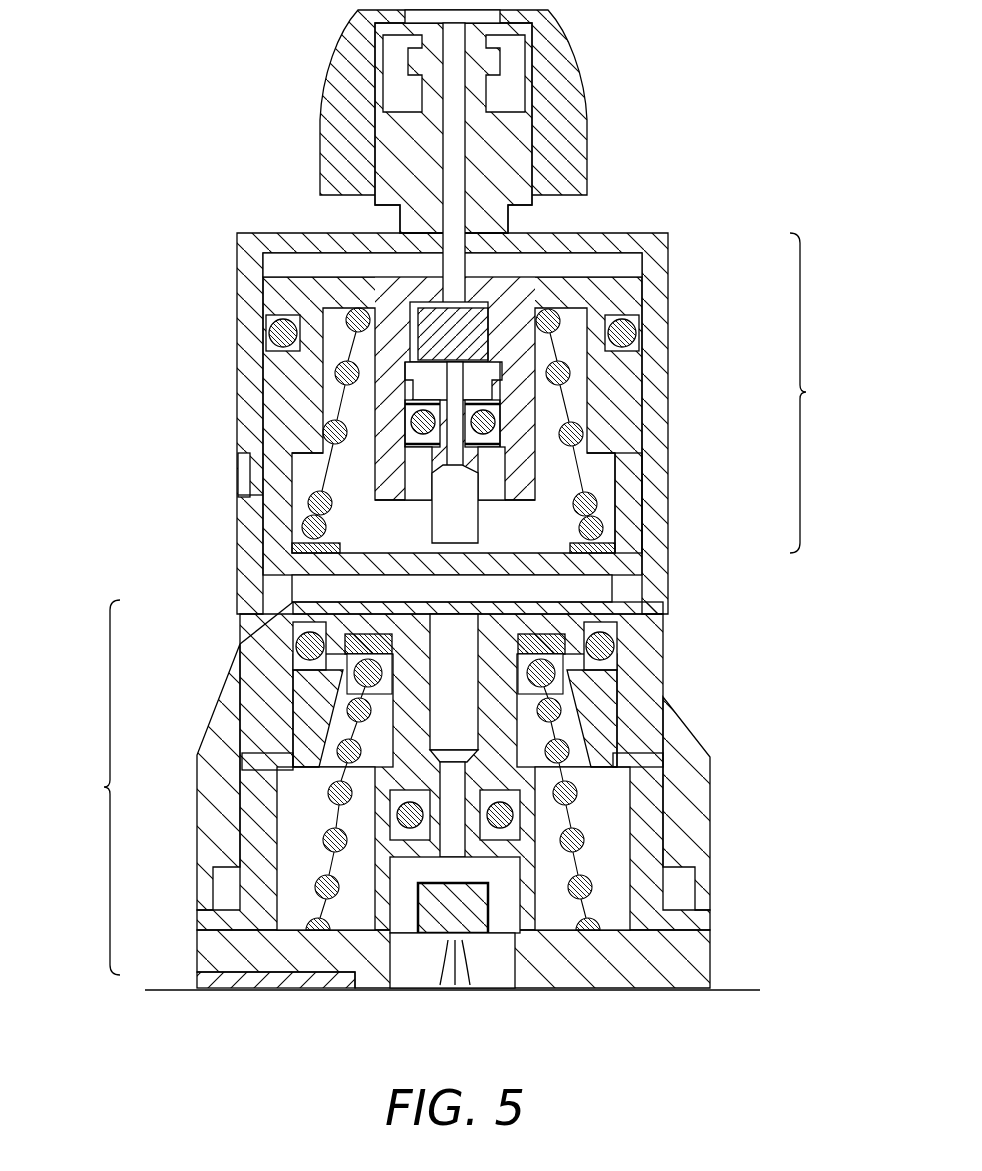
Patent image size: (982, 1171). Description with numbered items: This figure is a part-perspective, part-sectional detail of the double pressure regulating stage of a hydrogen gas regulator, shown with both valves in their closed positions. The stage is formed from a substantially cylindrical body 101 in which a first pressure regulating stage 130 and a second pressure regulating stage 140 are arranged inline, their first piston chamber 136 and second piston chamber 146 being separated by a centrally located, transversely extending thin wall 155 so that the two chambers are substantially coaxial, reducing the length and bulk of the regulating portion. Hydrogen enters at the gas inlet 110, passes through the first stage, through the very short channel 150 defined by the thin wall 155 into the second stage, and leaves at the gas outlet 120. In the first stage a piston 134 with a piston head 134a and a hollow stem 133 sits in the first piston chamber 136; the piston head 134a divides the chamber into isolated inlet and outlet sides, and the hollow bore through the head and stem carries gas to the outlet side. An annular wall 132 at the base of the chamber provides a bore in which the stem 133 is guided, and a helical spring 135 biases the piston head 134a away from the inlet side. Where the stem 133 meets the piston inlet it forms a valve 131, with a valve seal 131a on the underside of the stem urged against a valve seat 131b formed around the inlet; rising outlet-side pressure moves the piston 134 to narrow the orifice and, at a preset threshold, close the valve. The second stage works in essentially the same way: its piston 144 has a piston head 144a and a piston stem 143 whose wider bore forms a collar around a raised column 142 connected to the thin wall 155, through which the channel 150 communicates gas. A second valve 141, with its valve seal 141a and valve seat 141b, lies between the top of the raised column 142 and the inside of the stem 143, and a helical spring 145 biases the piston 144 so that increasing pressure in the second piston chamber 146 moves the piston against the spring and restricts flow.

The cylindrical body 101 is at (245, 288).
The gas inlet 110 is at (455, 975).
The gas outlet 120 is at (355, 40).
The first pressure regulating stage 130 is at (82, 787).
The valve 131 is at (430, 950).
The valve seal 131a is at (405, 968).
The valve seat 131b is at (478, 968).
The annular wall 132 is at (320, 872).
The hollow stem 133 is at (300, 688).
The piston 134 is at (290, 745).
The piston head 134a is at (660, 607).
The helical spring 135 is at (640, 830).
The first piston chamber 136 is at (598, 797).
The second pressure regulating stage 140 is at (826, 393).
The second valve 141 is at (615, 392).
The valve seal 141a is at (505, 345).
The valve seat 141b is at (268, 345).
The raised column 142 is at (400, 543).
The piston stem 143 is at (378, 480).
The piston 144 is at (290, 400).
The piston head 144a is at (300, 280).
The helical spring 145 is at (250, 430).
The second piston chamber 146 is at (545, 520).
The channel 150 is at (300, 547).
The thin wall 155 is at (620, 582).